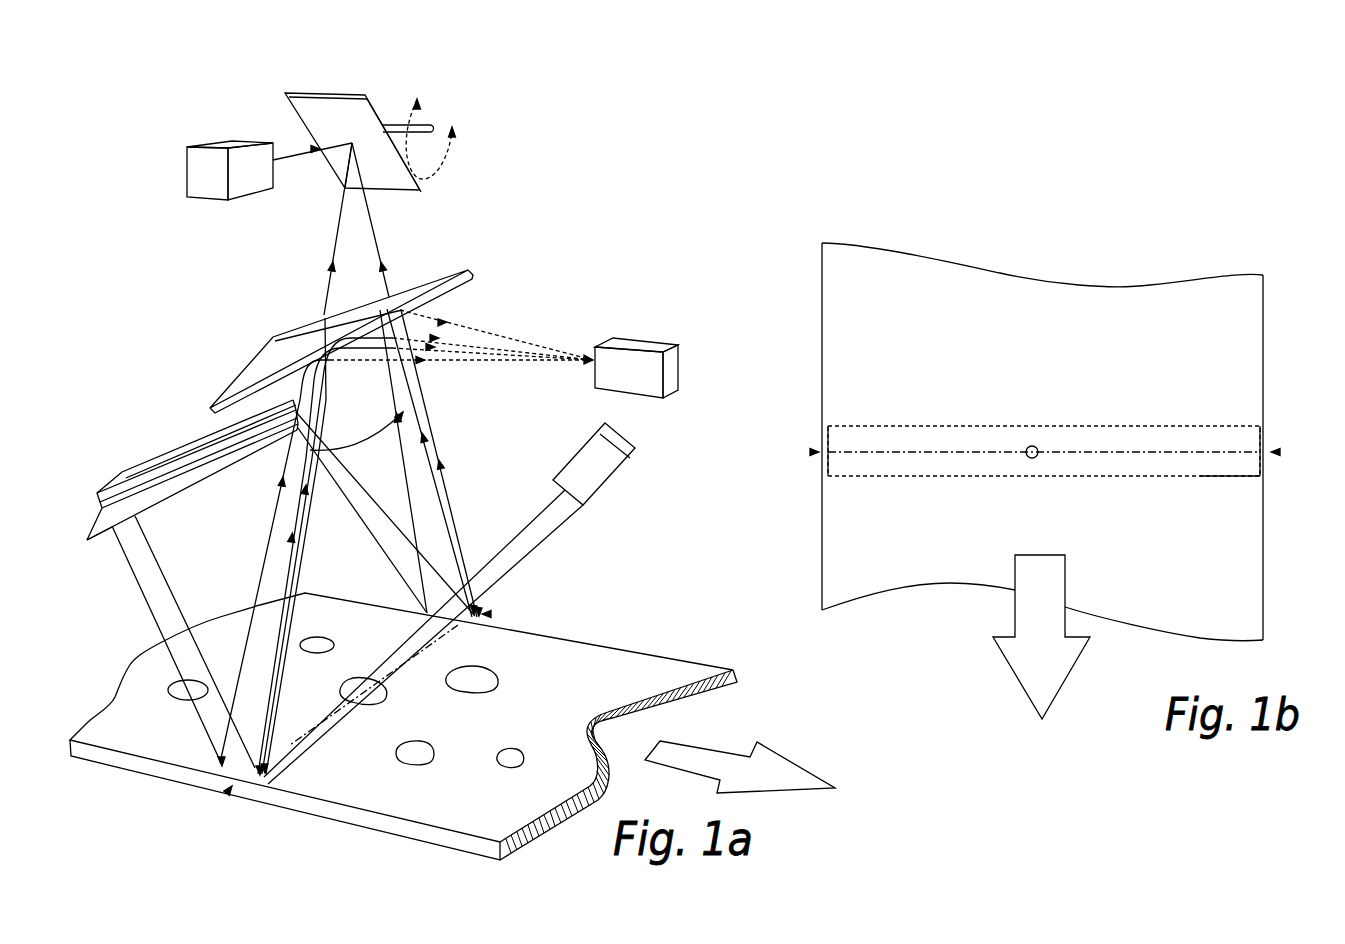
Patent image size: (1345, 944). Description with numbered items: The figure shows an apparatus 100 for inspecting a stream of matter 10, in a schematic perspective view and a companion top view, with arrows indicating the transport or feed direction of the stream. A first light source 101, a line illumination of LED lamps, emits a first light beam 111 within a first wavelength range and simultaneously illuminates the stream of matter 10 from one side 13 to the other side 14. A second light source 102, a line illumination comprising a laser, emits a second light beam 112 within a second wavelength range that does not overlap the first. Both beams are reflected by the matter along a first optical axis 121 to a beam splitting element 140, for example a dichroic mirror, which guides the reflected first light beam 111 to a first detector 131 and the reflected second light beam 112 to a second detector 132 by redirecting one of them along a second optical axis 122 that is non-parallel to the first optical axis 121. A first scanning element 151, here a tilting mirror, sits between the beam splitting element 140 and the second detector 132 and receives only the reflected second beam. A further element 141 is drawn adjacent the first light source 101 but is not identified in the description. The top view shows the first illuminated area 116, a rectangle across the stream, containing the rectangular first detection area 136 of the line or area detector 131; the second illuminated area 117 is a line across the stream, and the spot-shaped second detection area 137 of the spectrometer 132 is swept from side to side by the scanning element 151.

In FIG. 1A, the apparatus 100 is at (510, 113).
In FIG. 1A, the first light source 101 is at (152, 457).
In FIG. 1A, the second light source 102 is at (627, 440).
In FIG. 1A, the stream of matter 10 is at (375, 702).
In FIG. 1A, the one side of the stream of matter 13 is at (487, 614).
In FIG. 1B, the one side of the stream of matter 13 is at (1276, 452).
In FIG. 1A, the other side of the stream of matter 14 is at (229, 790).
In FIG. 1B, the other side of the stream of matter 14 is at (813, 453).
In FIG. 1A, the first light beam 111 is at (362, 532).
In FIG. 1A, the second light beam 112 is at (545, 545).
In FIG. 1A, the first optical axis 121 is at (297, 500).
In FIG. 1A, the second optical axis 122 is at (535, 362).
In FIG. 1A, the first detector 131 is at (646, 347).
In FIG. 1A, the second detector 132 is at (222, 138).
In FIG. 1A, the beam splitting element 140 is at (447, 267).
In FIG. 1A, the lens 141 is at (112, 533).
In FIG. 1A, the first scanning element 151 is at (338, 93).
In FIG. 1B, the first illuminated area 116 is at (1197, 430).
In FIG. 1B, the second illuminated area 117 is at (902, 447).
In FIG. 1B, the first detection area 136 is at (1222, 473).
In FIG. 1B, the second detection area 137 is at (1032, 445).